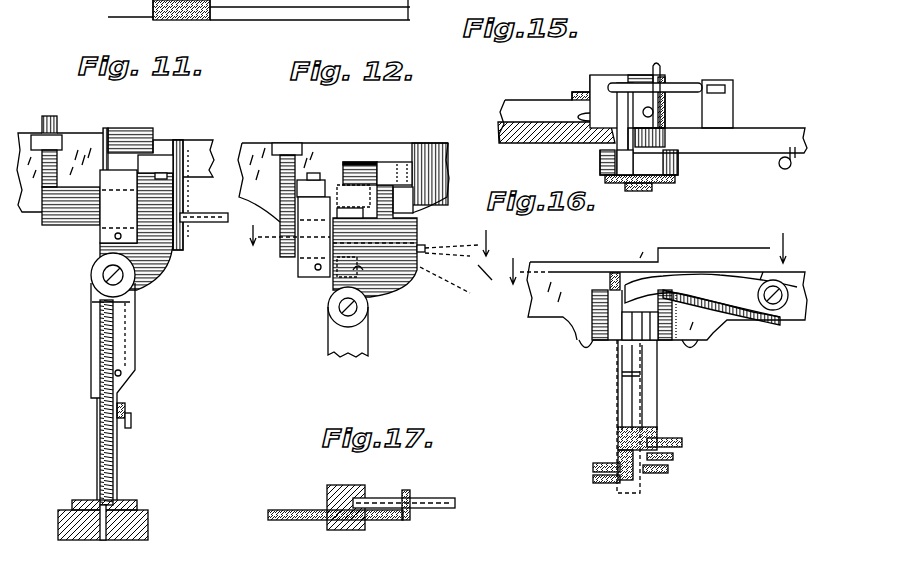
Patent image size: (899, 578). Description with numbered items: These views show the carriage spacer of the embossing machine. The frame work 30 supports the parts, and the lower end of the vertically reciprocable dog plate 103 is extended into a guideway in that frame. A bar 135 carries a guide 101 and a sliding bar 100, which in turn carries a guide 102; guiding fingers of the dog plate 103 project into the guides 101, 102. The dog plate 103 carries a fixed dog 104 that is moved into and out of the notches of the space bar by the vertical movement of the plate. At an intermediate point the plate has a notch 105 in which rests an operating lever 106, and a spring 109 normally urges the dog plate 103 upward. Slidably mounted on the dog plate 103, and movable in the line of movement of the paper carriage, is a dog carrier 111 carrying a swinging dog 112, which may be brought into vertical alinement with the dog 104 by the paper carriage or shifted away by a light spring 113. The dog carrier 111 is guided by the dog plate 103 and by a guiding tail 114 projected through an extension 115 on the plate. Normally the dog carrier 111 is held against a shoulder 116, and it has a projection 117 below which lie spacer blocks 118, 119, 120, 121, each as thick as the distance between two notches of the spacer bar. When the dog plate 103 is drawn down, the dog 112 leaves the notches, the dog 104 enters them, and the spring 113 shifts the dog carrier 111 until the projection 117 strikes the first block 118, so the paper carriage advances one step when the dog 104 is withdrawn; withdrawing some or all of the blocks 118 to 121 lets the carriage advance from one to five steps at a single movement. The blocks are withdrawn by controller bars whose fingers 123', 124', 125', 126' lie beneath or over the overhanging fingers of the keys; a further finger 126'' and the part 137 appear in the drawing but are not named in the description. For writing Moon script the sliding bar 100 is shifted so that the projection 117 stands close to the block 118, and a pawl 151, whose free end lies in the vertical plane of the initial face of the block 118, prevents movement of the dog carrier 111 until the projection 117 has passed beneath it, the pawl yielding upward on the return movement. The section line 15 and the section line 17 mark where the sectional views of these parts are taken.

In FIG. 11, the frame work 30 is at (140, 520).
In FIG. 11, the sliding bar 100 is at (213, 140).
In FIG. 12, the sliding bar 100 is at (433, 180).
In FIG. 15, the sliding bar 100 is at (525, 113).
In FIG. 16, the sliding bar 100 is at (663, 298).
In FIG. 12, the guide 101 is at (278, 142).
In FIG. 15, the guide 101 is at (735, 80).
In FIG. 11, the guide 102 is at (157, 158).
In FIG. 12, the guide 102 is at (390, 165).
In FIG. 11, the dog plate 103 is at (72, 217).
In FIG. 12, the dog plate 103 is at (387, 277).
In FIG. 15, the dog plate 103 is at (680, 85).
In FIG. 17, the dog plate 103 is at (312, 517).
In FIG. 11, the fixed dog 104 is at (115, 130).
In FIG. 12, the fixed dog 104 is at (350, 162).
In FIG. 15, the fixed dog 104 is at (660, 65).
In FIG. 11, the notch 105 is at (130, 422).
In FIG. 11, the operating lever 106 is at (128, 403).
In FIG. 11, the spring 109 is at (110, 470).
In FIG. 11, the dog carrier 111 is at (110, 212).
In FIG. 12, the dog carrier 111 is at (297, 268).
In FIG. 15, the dog carrier 111 is at (632, 75).
In FIG. 17, the dog carrier 111 is at (328, 497).
In FIG. 11, the swinging dog 112 is at (103, 150).
In FIG. 12, the swinging dog 112 is at (302, 192).
In FIG. 11, the light spring 113 is at (133, 330).
In FIG. 11, the guiding tail 114 is at (197, 221).
In FIG. 12, the guiding tail 114 is at (420, 246).
In FIG. 17, the guiding tail 114 is at (440, 510).
In FIG. 12, the extension 115 is at (446, 288).
In FIG. 17, the extension 115 is at (410, 493).
In FIG. 15, the shoulder 116 is at (615, 143).
In FIG. 15, the projection 117 is at (625, 183).
In FIG. 16, the projection 117 is at (615, 273).
In FIG. 16, the spacer block 118 is at (620, 343).
In FIG. 16, the spacer block 119 is at (628, 340).
In FIG. 16, the spacer block 120 is at (643, 390).
In FIG. 16, the spacer block 121 is at (665, 343).
In FIG. 16, the fingers 123' is at (586, 502).
In FIG. 16, the fingers 124' is at (597, 449).
In FIG. 16, the fingers 125' is at (663, 490).
In FIG. 16, the fingers 126' is at (696, 430).
In FIG. 16, the washer 126'' is at (640, 504).
In FIG. 12, the bar 135 is at (222, 137).
In FIG. 15, the bar 135 is at (738, 133).
In FIG. 15, the flange 137 is at (645, 191).
In FIG. 16, the flange 137 is at (623, 365).
In FIG. 15, the pawl 151 is at (765, 165).
In FIG. 16, the pawl 151 is at (708, 280).
In FIG. 12, the section line 15 is at (493, 280).
In FIG. 16, the section line 15 is at (793, 248).
In FIG. 12, the section line 17 is at (372, 240).
In FIG. 16, the section line 17 is at (507, 261).